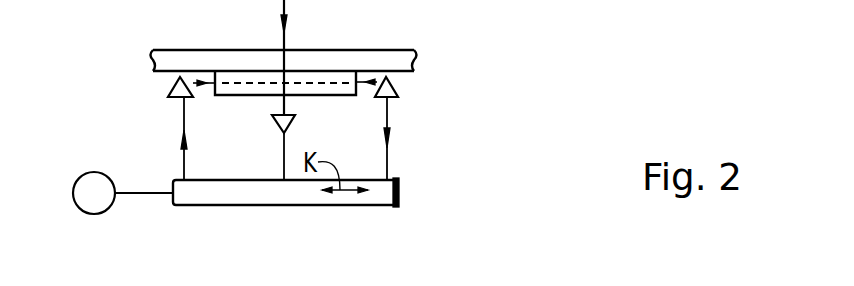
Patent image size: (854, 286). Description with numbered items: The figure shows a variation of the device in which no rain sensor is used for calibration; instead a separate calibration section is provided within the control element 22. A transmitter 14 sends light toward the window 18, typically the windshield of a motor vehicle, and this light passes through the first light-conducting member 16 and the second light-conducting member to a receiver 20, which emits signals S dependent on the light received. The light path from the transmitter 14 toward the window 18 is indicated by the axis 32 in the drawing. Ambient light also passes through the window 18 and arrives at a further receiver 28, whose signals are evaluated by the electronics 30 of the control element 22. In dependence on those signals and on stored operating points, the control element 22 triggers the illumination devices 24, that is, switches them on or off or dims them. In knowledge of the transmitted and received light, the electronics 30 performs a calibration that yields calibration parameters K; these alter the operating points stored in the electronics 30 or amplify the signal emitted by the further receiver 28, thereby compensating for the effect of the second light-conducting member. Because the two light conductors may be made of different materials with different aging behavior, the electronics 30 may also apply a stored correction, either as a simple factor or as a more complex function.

The transmitter 14 is at (168, 87).
The first light-conducting member 16 is at (218, 95).
The window 18 is at (392, 58).
The receiver 20 is at (398, 90).
The control element 22 is at (212, 209).
The illumination devices 24 is at (110, 206).
The further receiver 28 is at (292, 122).
The electronics 30 is at (399, 191).
The force axis 32 is at (293, 80).